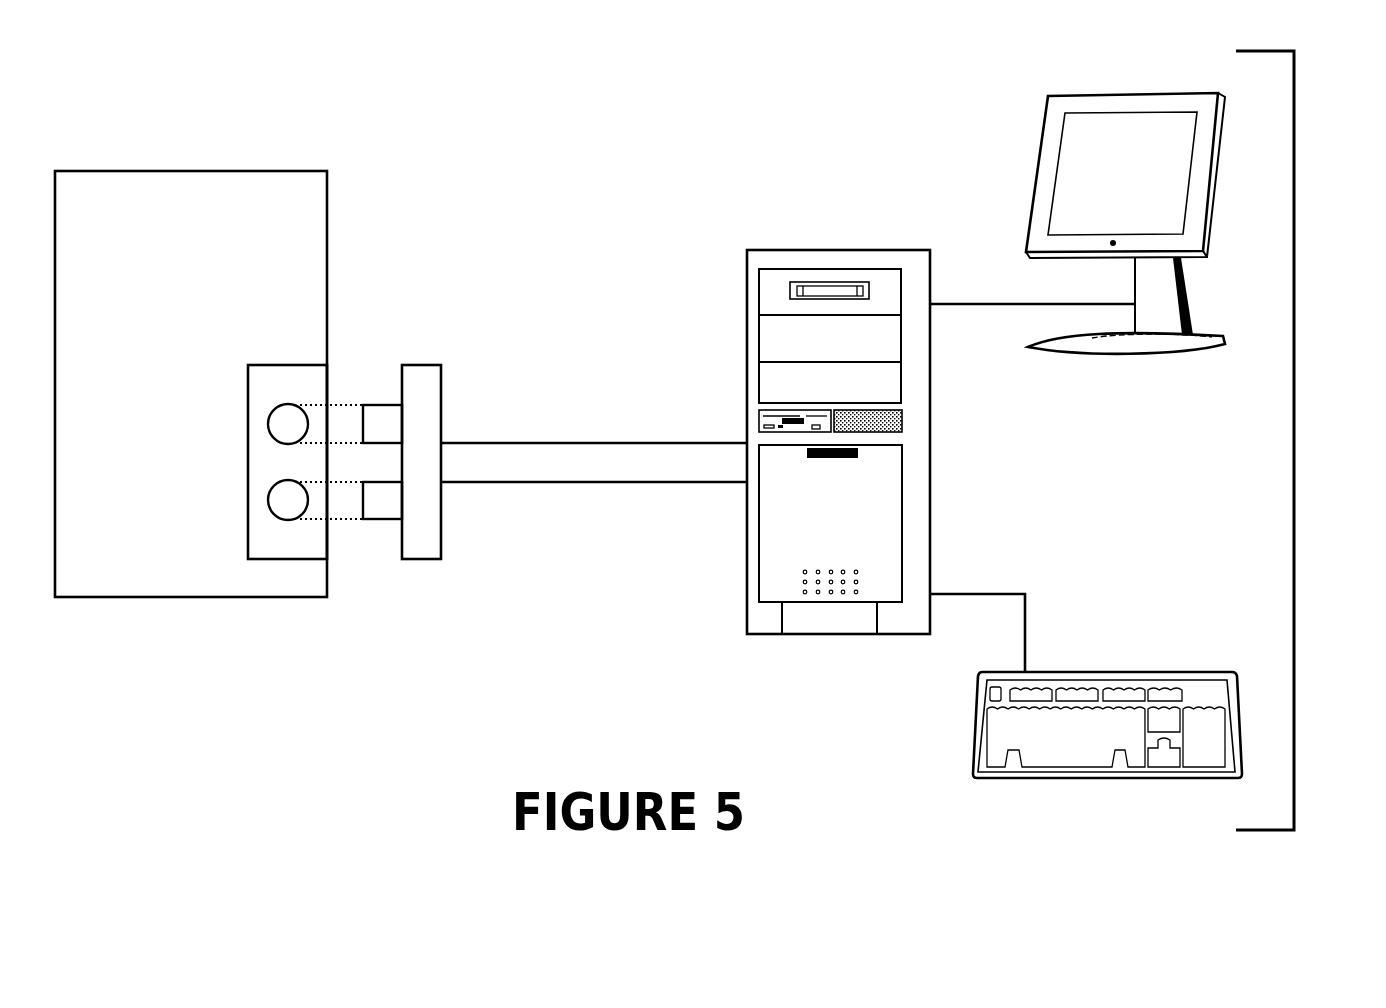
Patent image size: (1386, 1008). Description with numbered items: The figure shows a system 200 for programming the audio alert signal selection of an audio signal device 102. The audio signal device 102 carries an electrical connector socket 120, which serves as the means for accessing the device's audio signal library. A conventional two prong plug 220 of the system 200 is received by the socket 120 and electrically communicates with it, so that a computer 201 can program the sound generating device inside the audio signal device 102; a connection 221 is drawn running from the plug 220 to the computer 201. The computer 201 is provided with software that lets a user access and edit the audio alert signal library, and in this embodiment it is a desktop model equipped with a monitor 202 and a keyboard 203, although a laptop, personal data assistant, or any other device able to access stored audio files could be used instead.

The audio signal device 102 is at (124, 597).
The electrical connector socket 120 is at (276, 365).
The two prong plug 220 is at (441, 400).
The cable 221 is at (525, 482).
The computer 201 is at (793, 247).
The monitor 202 is at (1097, 355).
The keyboard 203 is at (992, 780).
The system 200 is at (1301, 440).